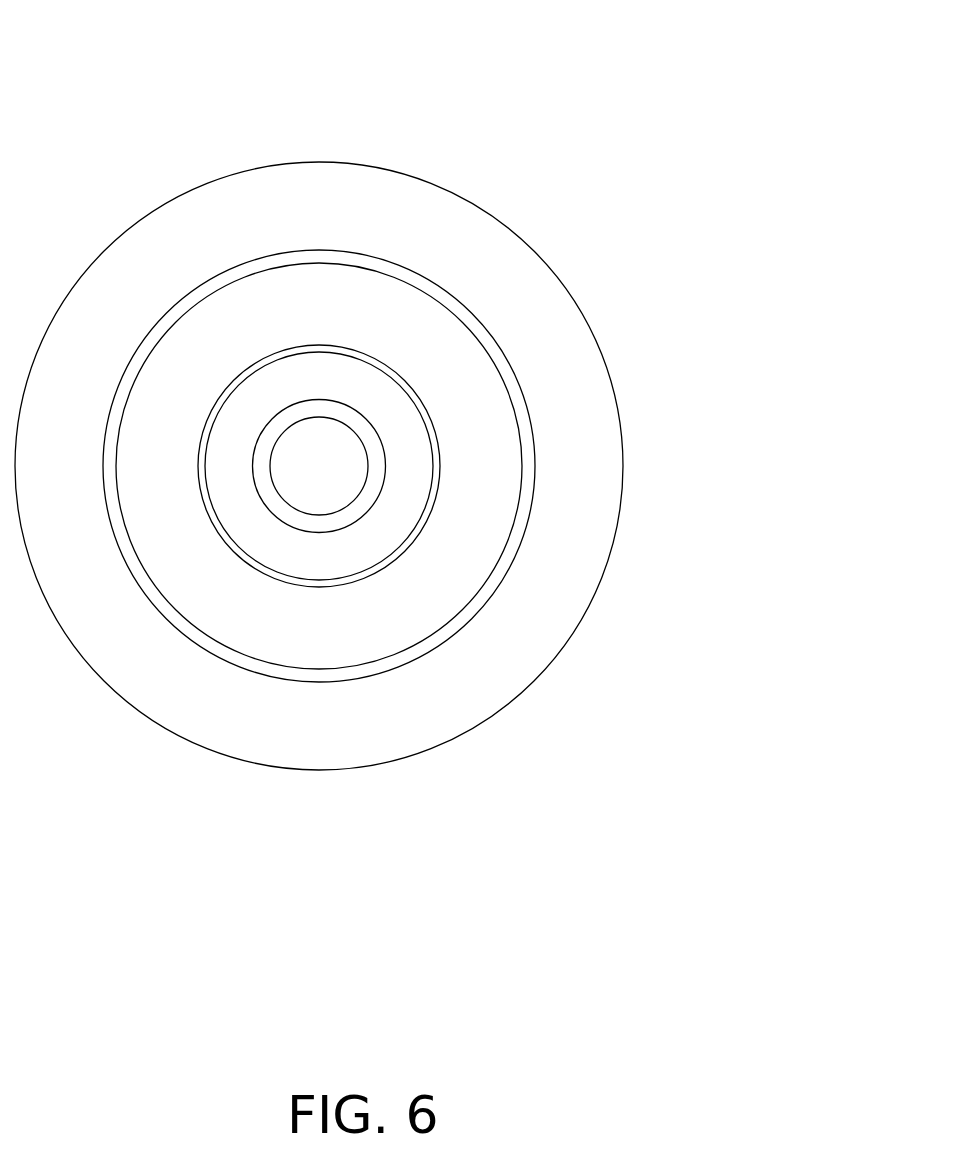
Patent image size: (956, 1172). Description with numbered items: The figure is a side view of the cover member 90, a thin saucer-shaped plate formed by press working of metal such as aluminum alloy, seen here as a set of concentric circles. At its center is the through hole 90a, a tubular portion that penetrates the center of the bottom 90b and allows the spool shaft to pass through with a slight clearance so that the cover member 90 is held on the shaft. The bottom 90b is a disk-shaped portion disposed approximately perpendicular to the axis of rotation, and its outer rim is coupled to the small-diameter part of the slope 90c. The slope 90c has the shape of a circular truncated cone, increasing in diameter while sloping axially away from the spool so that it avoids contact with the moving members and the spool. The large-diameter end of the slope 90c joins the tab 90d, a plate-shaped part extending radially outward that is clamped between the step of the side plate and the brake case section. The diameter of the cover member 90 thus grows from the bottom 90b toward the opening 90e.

The cover member 90 is at (500, 160).
The through hole 90a is at (317, 498).
The bottom 90b is at (393, 523).
The slope 90c is at (475, 450).
The tab 90d is at (533, 307).
The opening 90e is at (528, 498).